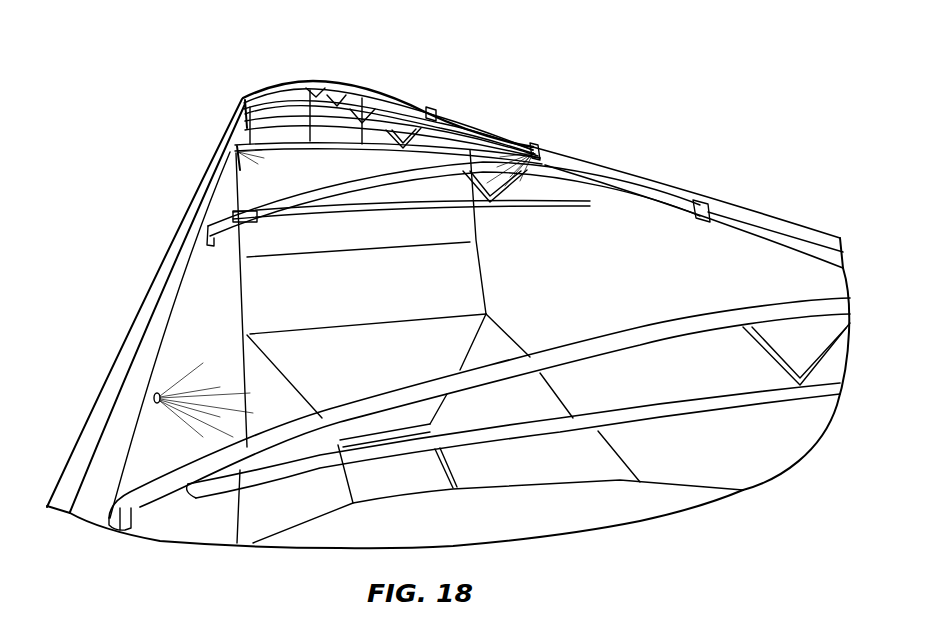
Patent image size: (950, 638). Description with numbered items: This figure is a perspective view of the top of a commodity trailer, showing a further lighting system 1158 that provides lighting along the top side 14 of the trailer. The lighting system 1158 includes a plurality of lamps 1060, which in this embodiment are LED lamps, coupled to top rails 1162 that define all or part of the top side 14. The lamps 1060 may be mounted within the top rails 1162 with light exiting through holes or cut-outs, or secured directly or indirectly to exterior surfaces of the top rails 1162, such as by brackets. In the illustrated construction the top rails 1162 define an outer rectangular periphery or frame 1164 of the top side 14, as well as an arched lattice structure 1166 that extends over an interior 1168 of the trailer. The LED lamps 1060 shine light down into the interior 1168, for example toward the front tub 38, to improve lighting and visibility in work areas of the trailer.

The top side 14 is at (248, 80).
The front tub 38 is at (484, 411).
The lamps 1060 is at (240, 98).
The lighting system 1158 is at (374, 70).
The top rails 1162 is at (793, 238).
The frame 1164 is at (89, 499).
The arched lattice structure 1166 is at (207, 471).
The interior 1168 is at (561, 260).